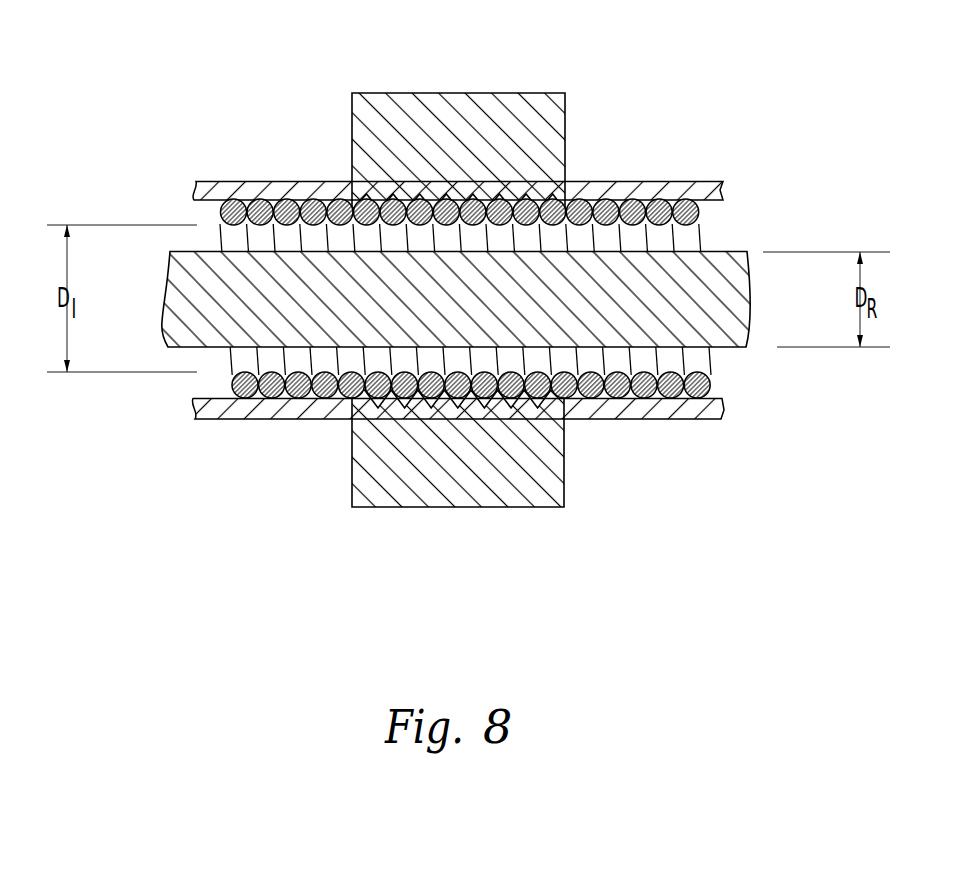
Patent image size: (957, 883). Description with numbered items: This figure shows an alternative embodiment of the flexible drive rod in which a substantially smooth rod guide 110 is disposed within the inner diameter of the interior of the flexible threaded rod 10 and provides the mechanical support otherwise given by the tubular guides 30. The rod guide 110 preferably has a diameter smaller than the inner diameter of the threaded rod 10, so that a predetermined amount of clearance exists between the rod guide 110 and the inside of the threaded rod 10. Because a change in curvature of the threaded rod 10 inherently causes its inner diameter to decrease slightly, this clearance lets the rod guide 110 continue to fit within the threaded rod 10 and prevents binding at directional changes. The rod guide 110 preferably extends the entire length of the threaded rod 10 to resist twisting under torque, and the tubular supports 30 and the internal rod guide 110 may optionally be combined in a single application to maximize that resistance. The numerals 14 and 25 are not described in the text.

The housing / outer block 14 is at (513, 93).
The tubular guide 30 is at (667, 181).
The rod guide 110 is at (727, 252).
The ball retainer cage 25 is at (730, 362).
The threaded rod 10 is at (195, 397).